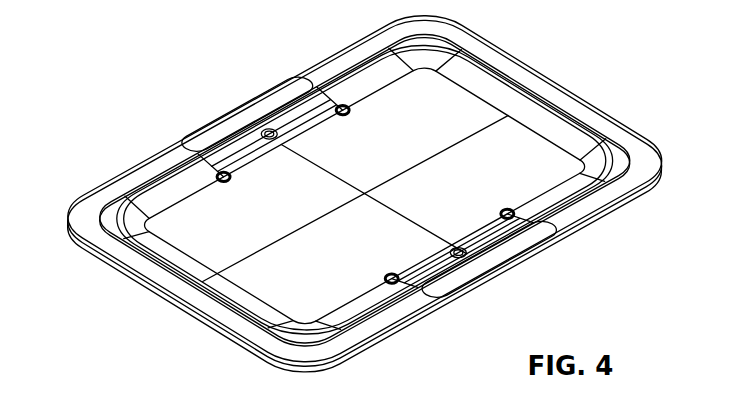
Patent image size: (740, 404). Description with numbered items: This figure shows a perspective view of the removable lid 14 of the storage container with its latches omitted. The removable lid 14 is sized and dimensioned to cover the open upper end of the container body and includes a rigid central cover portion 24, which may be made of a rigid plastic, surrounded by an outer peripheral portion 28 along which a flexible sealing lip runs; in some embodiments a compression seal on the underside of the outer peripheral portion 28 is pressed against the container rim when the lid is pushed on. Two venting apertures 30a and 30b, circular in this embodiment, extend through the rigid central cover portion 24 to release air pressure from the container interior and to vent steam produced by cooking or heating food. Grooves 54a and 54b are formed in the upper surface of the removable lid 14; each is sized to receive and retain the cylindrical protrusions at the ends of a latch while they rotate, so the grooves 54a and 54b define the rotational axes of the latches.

The removable lid 14 is at (166, 77).
The rigid central cover portion 24 is at (263, 287).
The outer peripheral portion 28 is at (600, 203).
The venting aperture 30a is at (514, 261).
The venting aperture 30b is at (264, 130).
The groove 54a is at (505, 205).
The groove 54b is at (336, 118).